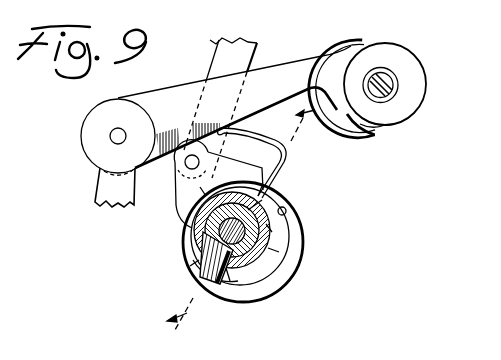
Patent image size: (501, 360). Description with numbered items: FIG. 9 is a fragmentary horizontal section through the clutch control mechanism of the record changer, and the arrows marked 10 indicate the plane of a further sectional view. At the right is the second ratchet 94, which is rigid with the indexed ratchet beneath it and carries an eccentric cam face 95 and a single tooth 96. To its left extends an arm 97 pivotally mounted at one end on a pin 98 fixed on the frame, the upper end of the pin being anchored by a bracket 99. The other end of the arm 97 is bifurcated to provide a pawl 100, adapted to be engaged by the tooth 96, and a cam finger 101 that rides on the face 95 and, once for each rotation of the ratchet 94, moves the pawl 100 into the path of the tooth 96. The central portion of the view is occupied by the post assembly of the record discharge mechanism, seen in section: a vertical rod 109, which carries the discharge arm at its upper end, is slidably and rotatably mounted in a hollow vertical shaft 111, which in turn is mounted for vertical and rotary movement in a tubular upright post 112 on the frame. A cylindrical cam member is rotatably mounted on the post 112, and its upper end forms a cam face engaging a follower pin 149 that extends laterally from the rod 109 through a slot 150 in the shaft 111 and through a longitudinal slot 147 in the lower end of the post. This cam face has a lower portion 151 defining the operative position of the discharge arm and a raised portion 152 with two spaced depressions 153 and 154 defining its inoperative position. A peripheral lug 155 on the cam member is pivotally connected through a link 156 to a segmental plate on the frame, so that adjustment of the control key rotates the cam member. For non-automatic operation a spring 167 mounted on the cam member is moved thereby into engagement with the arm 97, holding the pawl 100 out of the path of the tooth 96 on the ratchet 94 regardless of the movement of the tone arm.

The section line 10- 10 is at (249, 227).
The second ratchet 94 is at (410, 67).
The eccentric cam face 95 is at (391, 127).
The single tooth 96 is at (380, 42).
The arm 97 is at (286, 70).
The pin 98 is at (110, 142).
The bracket 99 is at (100, 185).
The pawl 100 is at (354, 41).
The cam finger 101 is at (368, 132).
The vertical rod 109 is at (248, 210).
The hollow vertical shaft 111 is at (286, 211).
The tubular upright post 112 is at (268, 229).
The longitudinal slot 147 is at (244, 288).
The follower pin 149 is at (180, 277).
The slot 150 is at (180, 228).
The lower portion 151 is at (268, 266).
The raised portion 152 is at (180, 215).
The depression 153 is at (178, 255).
The depression 154 is at (178, 272).
The peripheral lug 155 is at (177, 187).
The link 156 is at (220, 52).
The spring 167 is at (284, 164).